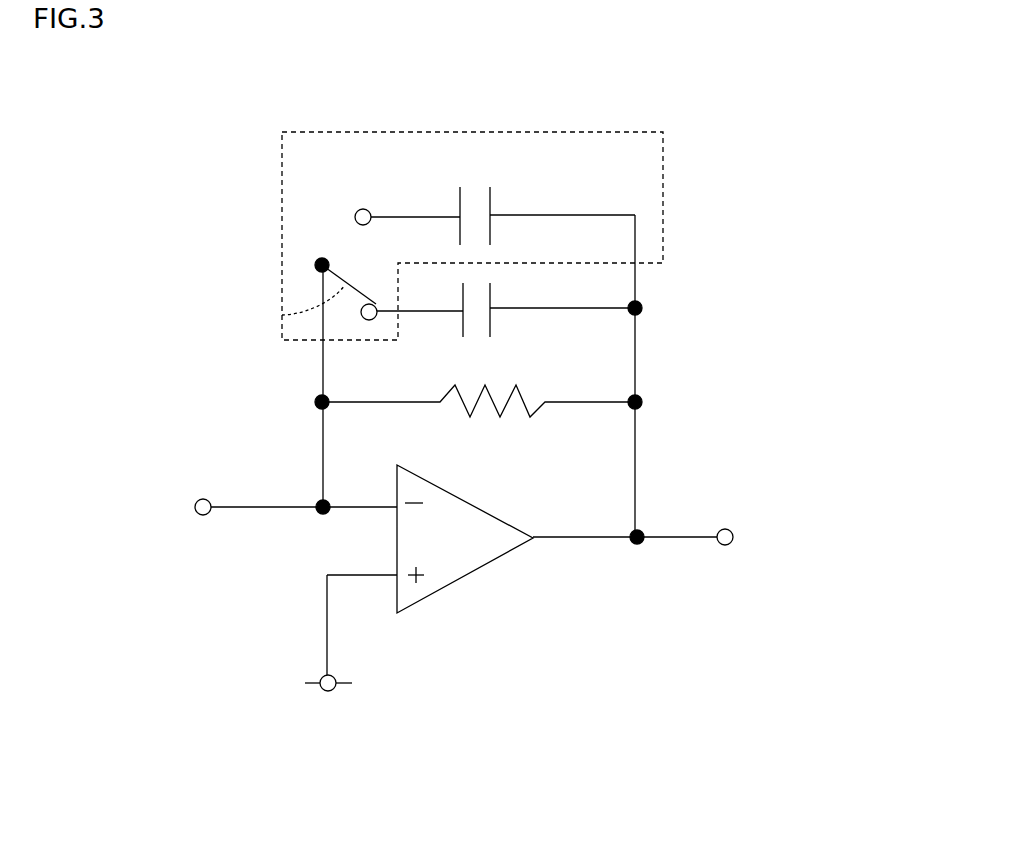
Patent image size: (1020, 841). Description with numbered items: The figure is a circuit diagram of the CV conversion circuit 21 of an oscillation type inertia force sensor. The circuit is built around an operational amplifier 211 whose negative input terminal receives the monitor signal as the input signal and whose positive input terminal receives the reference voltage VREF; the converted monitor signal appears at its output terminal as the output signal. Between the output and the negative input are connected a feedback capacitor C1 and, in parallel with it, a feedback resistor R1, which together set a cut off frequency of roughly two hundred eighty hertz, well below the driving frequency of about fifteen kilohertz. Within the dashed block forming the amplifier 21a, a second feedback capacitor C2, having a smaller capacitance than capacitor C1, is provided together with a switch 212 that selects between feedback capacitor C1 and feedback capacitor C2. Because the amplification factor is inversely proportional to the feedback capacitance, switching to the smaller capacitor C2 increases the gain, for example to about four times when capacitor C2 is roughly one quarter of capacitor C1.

The CV conversion circuit 21 is at (692, 360).
The amplifier 21a is at (368, 132).
The operational amplifier 211 is at (470, 572).
The switch 212 is at (320, 313).
The feedback capacitor C1 is at (509, 305).
The feedback capacitor C2 is at (495, 211).
The feedback resistor R1 is at (478, 391).